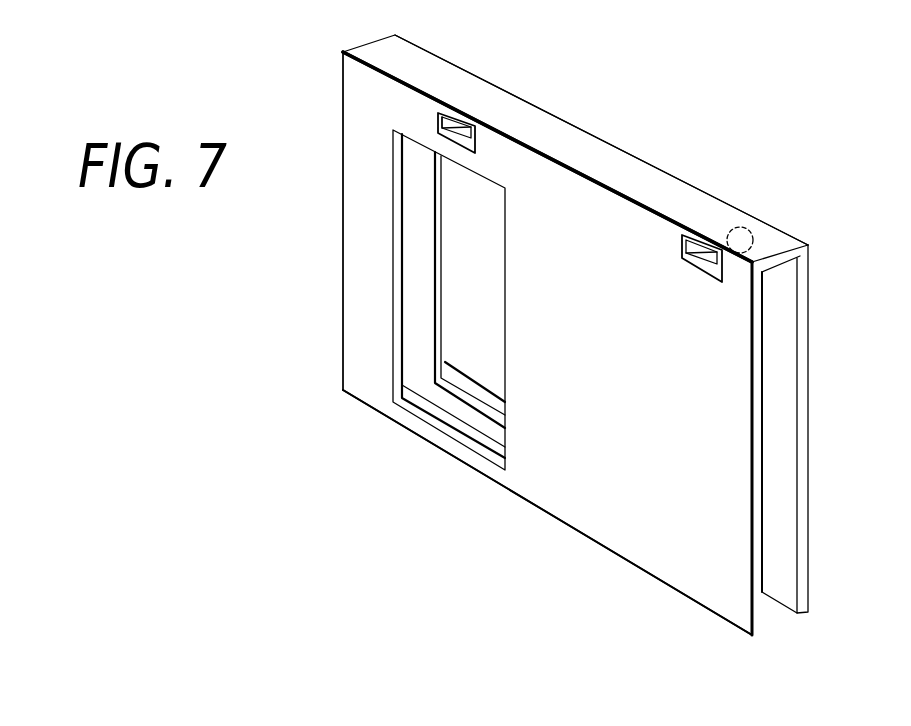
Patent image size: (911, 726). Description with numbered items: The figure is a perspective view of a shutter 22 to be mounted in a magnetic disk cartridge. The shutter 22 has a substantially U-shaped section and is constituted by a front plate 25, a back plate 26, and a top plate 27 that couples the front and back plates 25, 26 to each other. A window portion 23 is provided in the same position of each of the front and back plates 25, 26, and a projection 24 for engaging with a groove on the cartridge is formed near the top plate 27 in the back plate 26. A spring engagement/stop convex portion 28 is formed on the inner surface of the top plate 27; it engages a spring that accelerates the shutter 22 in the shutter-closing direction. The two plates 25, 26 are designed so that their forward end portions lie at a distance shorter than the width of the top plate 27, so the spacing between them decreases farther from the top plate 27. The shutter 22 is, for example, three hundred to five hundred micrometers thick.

The shutter 22 is at (725, 184).
The window portion 23 is at (505, 385).
The projection 24 is at (458, 120).
The front plate 25 is at (785, 558).
The back plate 26 is at (652, 553).
The top plate 27 is at (607, 148).
The spring engagement/stop convex portion 28 is at (767, 217).